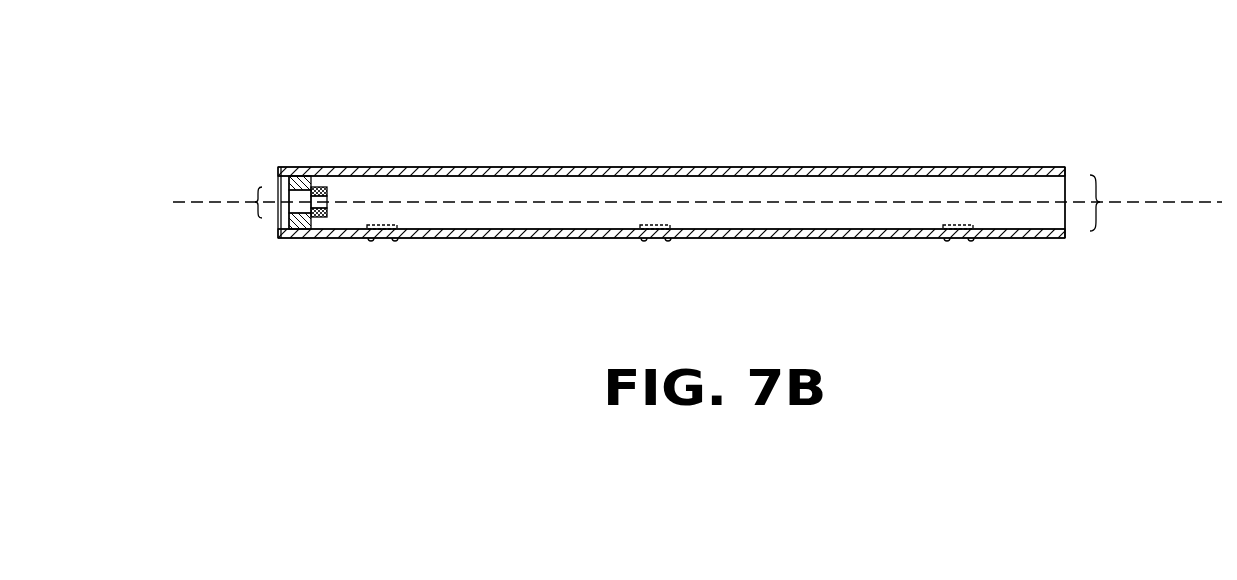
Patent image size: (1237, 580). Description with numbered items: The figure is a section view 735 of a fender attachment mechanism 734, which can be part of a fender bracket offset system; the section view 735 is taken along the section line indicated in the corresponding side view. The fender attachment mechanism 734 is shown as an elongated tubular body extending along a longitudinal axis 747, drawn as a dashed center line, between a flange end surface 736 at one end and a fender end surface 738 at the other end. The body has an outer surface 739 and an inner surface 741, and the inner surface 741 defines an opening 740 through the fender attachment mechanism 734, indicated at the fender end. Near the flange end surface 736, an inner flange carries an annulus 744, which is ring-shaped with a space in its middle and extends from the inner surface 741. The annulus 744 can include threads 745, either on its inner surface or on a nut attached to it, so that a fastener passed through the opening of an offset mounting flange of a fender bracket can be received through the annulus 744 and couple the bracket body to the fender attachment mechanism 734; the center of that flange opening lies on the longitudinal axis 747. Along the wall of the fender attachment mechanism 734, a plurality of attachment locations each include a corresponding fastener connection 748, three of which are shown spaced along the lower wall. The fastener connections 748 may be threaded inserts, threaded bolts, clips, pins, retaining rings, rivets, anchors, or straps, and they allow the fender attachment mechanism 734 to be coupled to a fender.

The fender attachment mechanism 734 is at (516, 160).
The section view 735 is at (288, 68).
The flange end surface 736 is at (278, 170).
The fender end surface 738 is at (1065, 172).
The outer surface 739 is at (703, 167).
The opening 740 is at (1100, 202).
The inner surface 741 is at (790, 177).
The annulus 744 is at (255, 202).
The threads 745 is at (323, 187).
The longitudinal axis 747 is at (1205, 203).
The fastener connections 748 is at (382, 240).